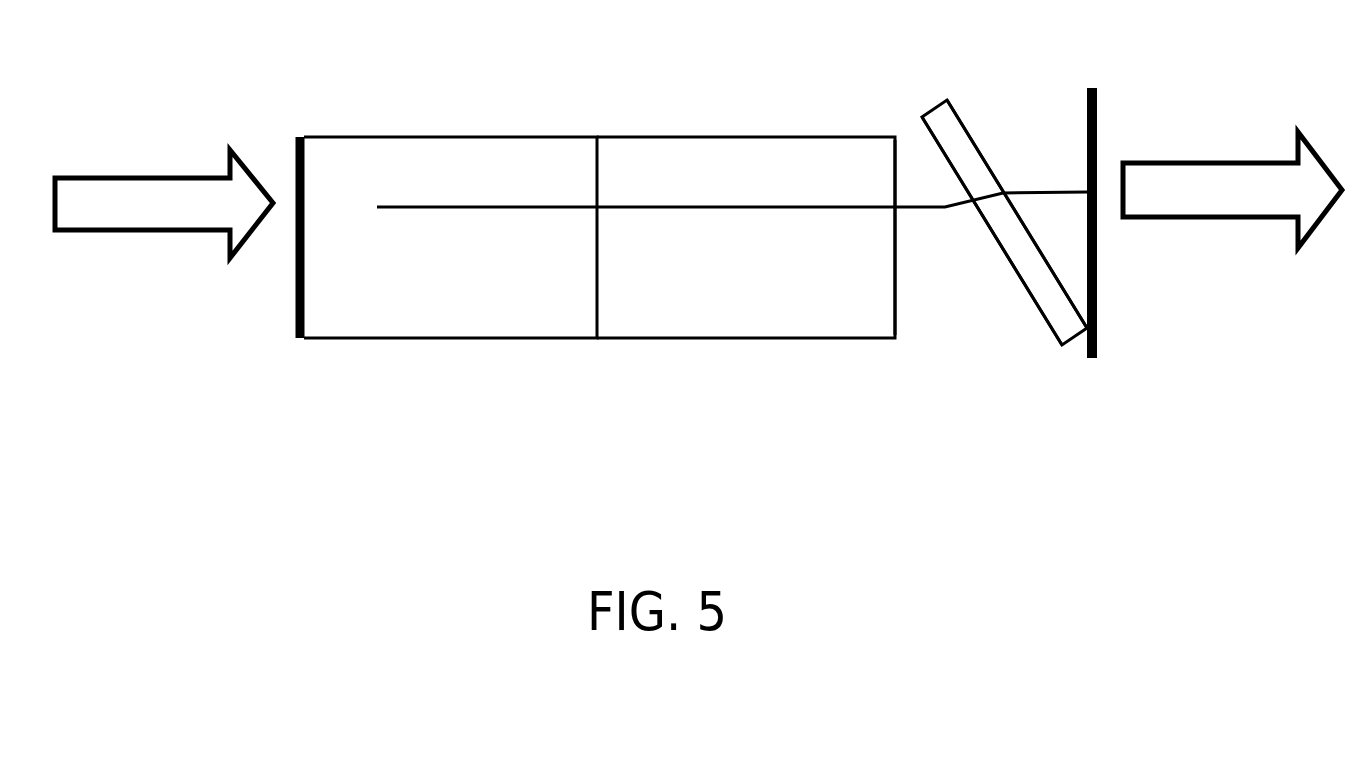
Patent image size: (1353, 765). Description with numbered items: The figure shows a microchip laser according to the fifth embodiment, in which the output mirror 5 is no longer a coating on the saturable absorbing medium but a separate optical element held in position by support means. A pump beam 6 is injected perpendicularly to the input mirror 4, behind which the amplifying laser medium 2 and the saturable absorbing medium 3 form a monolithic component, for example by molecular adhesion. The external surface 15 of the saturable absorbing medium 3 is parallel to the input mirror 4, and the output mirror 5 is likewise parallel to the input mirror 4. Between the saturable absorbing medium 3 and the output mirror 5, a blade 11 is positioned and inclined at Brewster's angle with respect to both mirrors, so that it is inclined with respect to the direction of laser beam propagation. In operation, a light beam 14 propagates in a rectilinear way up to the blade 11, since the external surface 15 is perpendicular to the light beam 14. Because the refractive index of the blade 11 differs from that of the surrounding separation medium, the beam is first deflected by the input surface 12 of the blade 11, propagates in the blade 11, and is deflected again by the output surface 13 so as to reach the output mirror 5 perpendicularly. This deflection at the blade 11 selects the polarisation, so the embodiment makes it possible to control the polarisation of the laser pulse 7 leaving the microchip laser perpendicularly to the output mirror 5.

The amplifying laser medium 2 is at (348, 307).
The saturable absorbing medium 3 is at (708, 322).
The input mirror 4 is at (288, 167).
The output mirror 5 is at (1095, 147).
The pump beam 6 is at (118, 218).
The laser pulse 7 is at (1185, 203).
The blade 11 is at (955, 147).
The input surface 12 is at (1035, 307).
The output surface 13 is at (965, 125).
The light beam 14 is at (437, 207).
The external surface 15 is at (902, 308).